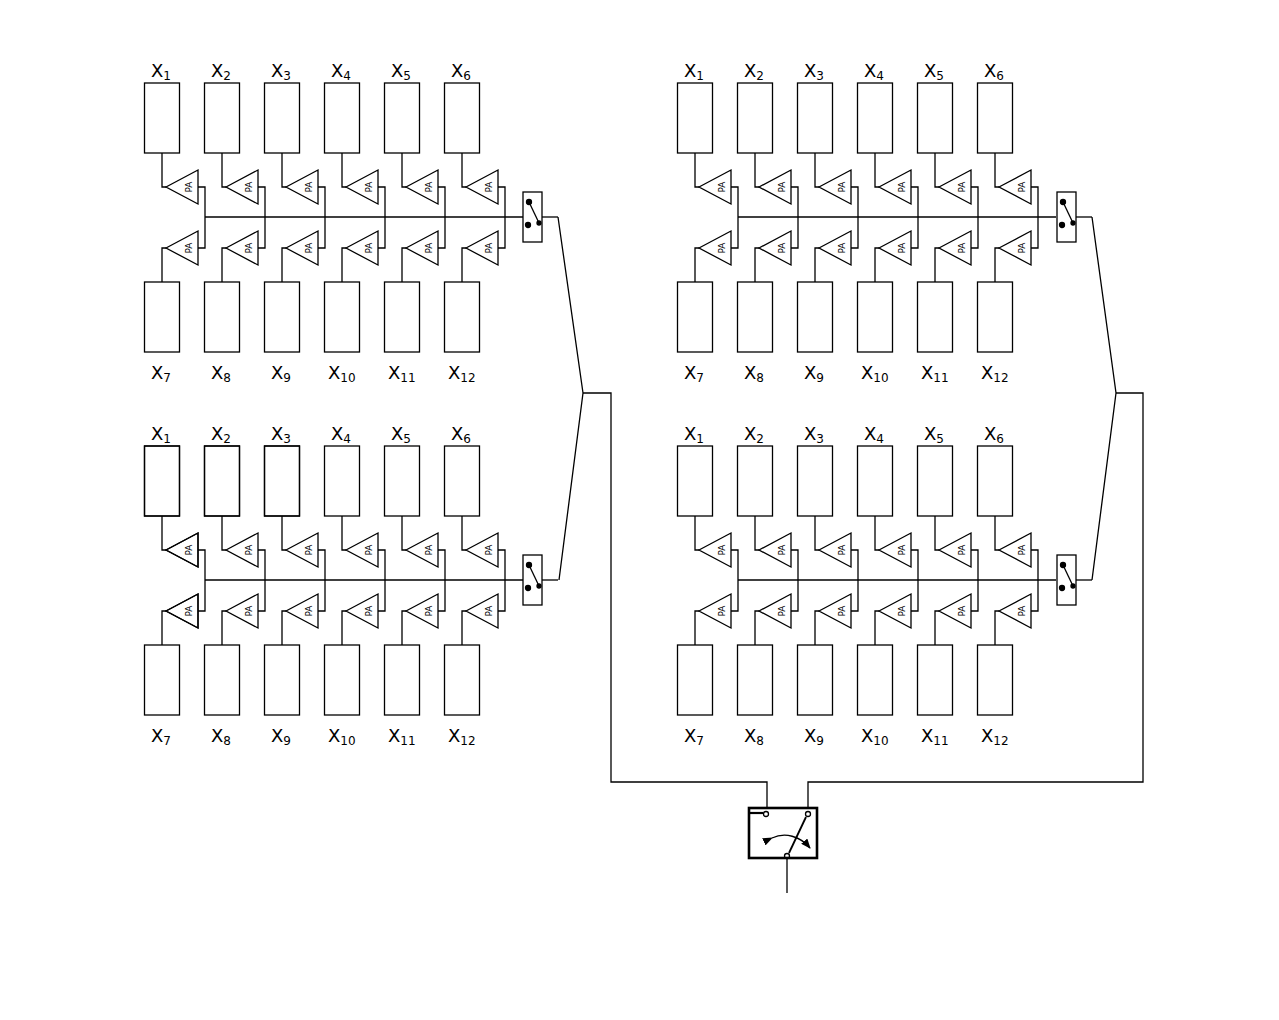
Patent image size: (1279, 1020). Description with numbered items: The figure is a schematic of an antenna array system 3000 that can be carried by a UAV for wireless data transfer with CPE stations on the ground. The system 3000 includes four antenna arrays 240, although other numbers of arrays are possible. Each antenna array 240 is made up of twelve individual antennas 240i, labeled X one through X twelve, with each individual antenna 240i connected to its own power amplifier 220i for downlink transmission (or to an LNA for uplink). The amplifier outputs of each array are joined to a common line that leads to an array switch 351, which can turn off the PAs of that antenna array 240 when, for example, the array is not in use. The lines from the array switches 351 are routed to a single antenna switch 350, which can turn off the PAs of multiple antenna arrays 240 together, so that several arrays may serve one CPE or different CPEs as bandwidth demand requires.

The antenna array system 3000 is at (1183, 93).
The antenna array 240 is at (635, 82).
The individual antenna 240i is at (273, 446).
The power amplifier 220i is at (183, 562).
The array switch 351 is at (535, 192).
The antenna switch 350 is at (820, 832).